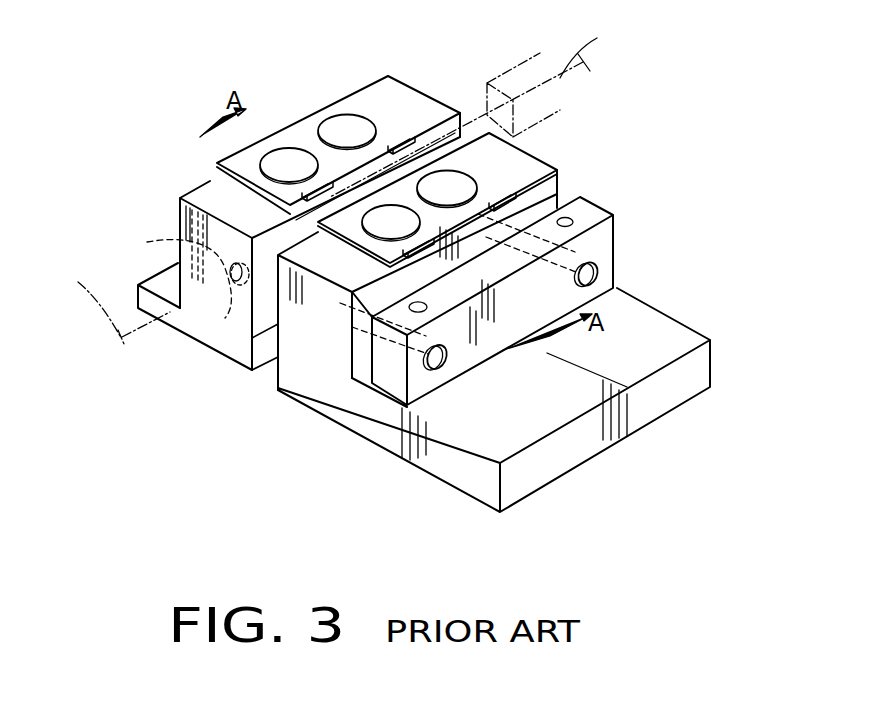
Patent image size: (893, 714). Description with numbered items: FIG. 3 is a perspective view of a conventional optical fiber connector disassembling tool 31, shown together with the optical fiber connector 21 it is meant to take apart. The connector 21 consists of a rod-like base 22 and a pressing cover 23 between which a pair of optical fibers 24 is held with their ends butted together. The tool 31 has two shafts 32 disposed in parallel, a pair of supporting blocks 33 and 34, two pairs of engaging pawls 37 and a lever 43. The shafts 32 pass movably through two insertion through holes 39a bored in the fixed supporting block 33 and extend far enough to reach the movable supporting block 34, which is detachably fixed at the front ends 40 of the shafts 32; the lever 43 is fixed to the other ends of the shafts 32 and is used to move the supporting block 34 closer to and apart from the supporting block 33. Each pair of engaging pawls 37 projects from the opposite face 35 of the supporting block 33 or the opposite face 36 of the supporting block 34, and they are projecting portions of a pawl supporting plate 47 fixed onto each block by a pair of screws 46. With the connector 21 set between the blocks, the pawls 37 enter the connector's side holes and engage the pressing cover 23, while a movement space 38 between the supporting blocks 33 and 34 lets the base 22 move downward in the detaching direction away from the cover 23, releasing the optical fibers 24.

The optical fiber connector 21 is at (505, 80).
The base 22 is at (170, 340).
The pressing cover 23 is at (302, 148).
The optical fibers 24 is at (330, 177).
The optical fiber connector disassembling tool 31 is at (354, 142).
The shafts 32 is at (462, 398).
The supporting block 33 is at (363, 417).
The supporting block 34 is at (187, 328).
The opposite face 35 is at (278, 383).
The opposite face 36 is at (260, 353).
The engaging pawls 37 is at (397, 143).
The movement space 38 is at (253, 340).
The insertion through holes 39a is at (596, 275).
The front ends 40 is at (171, 274).
The lever 43 is at (603, 242).
The screws 46 is at (345, 128).
The pawl supporting plate 47 is at (222, 163).